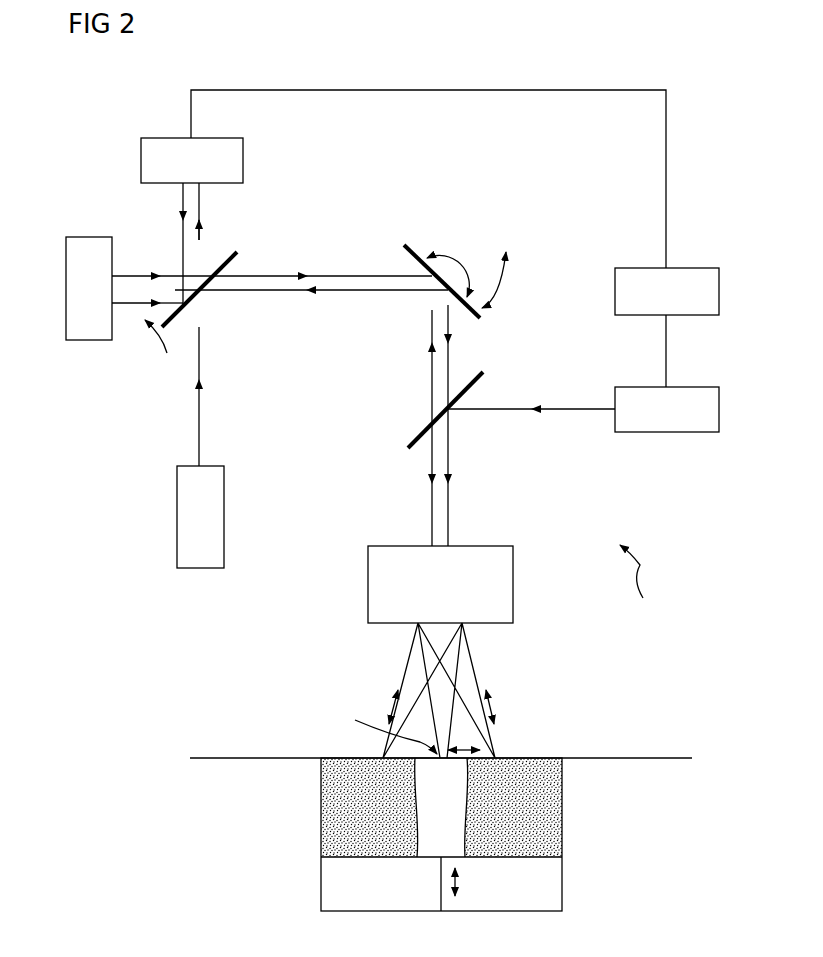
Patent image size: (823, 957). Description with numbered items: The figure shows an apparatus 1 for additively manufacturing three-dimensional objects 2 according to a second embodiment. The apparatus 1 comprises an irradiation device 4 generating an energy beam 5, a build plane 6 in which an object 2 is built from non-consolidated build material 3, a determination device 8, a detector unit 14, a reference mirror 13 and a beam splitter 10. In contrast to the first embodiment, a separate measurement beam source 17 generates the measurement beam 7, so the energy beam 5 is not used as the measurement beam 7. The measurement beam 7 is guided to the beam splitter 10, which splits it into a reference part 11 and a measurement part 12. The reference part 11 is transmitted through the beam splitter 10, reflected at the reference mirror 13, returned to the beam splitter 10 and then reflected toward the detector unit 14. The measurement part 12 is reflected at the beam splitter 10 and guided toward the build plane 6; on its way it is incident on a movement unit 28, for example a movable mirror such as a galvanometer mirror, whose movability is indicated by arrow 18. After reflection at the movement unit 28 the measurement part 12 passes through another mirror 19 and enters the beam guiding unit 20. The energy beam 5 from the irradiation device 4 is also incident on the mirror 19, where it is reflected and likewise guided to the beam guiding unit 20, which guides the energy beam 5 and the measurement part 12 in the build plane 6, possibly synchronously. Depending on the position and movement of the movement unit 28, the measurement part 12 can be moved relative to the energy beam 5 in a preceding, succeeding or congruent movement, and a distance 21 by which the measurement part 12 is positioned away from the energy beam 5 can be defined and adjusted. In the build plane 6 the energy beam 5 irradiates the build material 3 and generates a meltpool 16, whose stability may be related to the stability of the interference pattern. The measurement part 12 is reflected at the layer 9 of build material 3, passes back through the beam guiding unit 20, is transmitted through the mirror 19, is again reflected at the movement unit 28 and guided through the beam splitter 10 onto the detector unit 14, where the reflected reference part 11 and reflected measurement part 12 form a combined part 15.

The apparatus 1 is at (634, 581).
The three-dimensional object 2 is at (412, 852).
The build material 3 is at (562, 822).
The irradiation device 4 is at (668, 432).
The energy beam 5 is at (570, 409).
The build plane 6 is at (556, 756).
The measurement beam 7 is at (199, 430).
The determination device 8 is at (615, 292).
The layer 9 is at (417, 828).
The beam splitter 10 is at (215, 262).
The reference part 11 is at (183, 207).
The measurement part 12 is at (130, 276).
The reference mirror 13 is at (141, 158).
The detector unit 14 is at (90, 340).
The combined part 15 is at (167, 353).
The meltpool 16 is at (389, 724).
The measurement beam source 17 is at (177, 516).
The arrow 18 is at (504, 292).
The mirror 19 is at (468, 258).
The beam guiding unit 20 is at (368, 586).
The distance 21 is at (545, 778).
The movement unit 28 is at (418, 248).